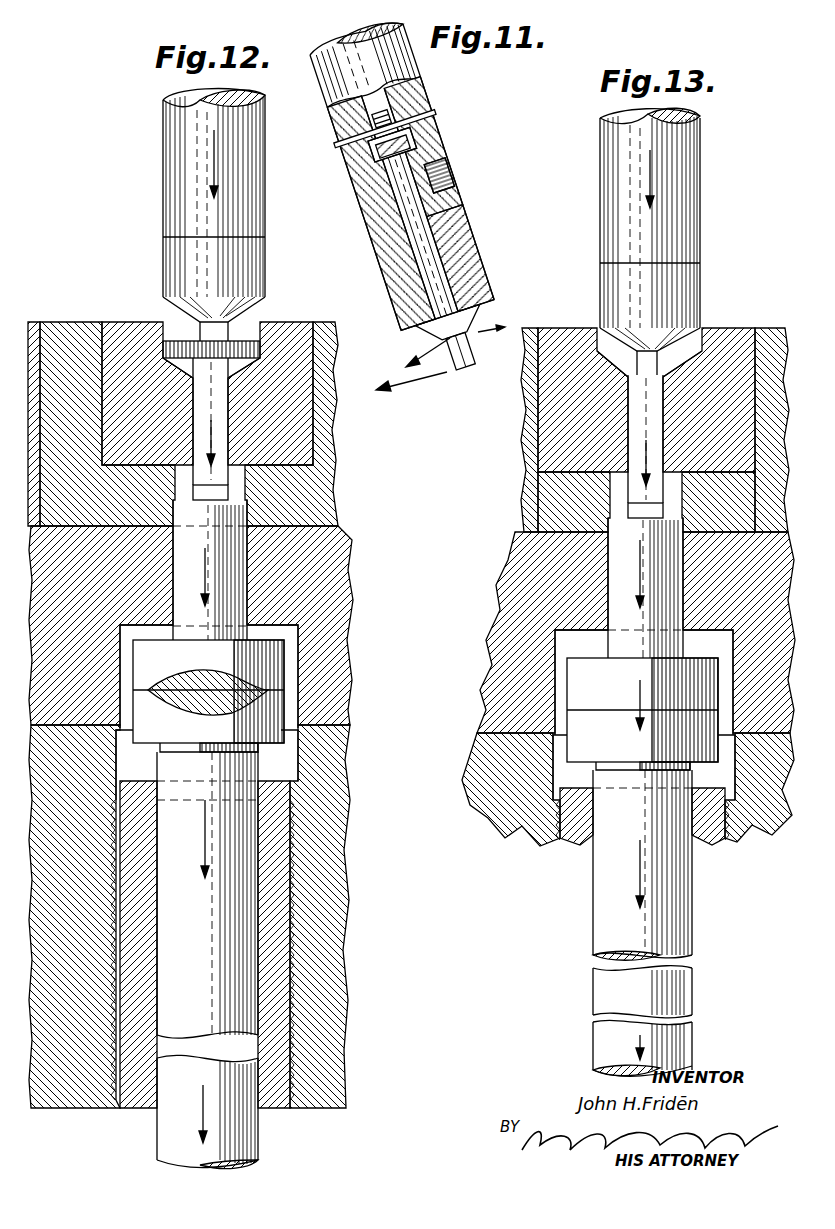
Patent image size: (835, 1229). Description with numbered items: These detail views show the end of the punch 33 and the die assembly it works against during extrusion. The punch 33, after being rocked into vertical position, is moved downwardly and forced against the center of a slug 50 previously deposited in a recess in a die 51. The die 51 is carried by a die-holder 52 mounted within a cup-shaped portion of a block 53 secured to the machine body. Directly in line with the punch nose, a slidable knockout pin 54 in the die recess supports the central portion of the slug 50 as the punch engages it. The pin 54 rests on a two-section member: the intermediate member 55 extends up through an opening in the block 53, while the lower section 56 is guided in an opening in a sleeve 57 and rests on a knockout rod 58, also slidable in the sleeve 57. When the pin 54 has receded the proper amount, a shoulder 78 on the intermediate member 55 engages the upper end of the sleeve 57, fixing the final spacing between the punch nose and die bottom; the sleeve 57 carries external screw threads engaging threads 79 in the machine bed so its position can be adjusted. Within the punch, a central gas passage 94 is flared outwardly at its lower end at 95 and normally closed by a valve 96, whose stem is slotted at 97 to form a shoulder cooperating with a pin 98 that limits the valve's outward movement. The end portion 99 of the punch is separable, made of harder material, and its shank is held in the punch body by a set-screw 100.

In FIG. 12, the punch 33 is at (172, 178).
In FIG. 11, the punch 33 is at (400, 68).
In FIG. 13, the punch 33 is at (688, 148).
In FIG. 12, the passage 94 is at (215, 99).
In FIG. 11, the passage 94 is at (355, 48).
In FIG. 13, the passage 94 is at (660, 124).
In FIG. 12, the end portion of the punch 99 is at (250, 266).
In FIG. 11, the end portion of the punch 99 is at (478, 272).
In FIG. 13, the end portion of the punch 99 is at (688, 285).
In FIG. 12, the valve 96 is at (232, 324).
In FIG. 11, the valve 96 is at (474, 342).
In FIG. 13, the valve 96 is at (644, 345).
In FIG. 11, the flared outward portion 95 is at (482, 322).
In FIG. 11, the slot or groove 97 is at (434, 137).
In FIG. 11, the pin 98 is at (432, 118).
In FIG. 11, the set-screw 100 is at (456, 172).
In FIG. 12, the slug 50 is at (178, 345).
In FIG. 12, the die 51 is at (125, 326).
In FIG. 13, the die 51 is at (727, 340).
In FIG. 12, the die-holder 52 is at (60, 340).
In FIG. 13, the die-holder 52 is at (768, 340).
In FIG. 12, the block 53 is at (342, 562).
In FIG. 13, the block 53 is at (522, 567).
In FIG. 12, the knockout pin 54 is at (233, 393).
In FIG. 13, the knockout pin 54 is at (630, 398).
In FIG. 12, the intermediate member 55 is at (230, 612).
In FIG. 13, the intermediate member 55 is at (642, 548).
In FIG. 12, the shoulder 78 is at (282, 748).
In FIG. 13, the shoulder 78 is at (712, 830).
In FIG. 12, the sleeve 57 is at (280, 877).
In FIG. 13, the sleeve 57 is at (578, 828).
In FIG. 12, the threads 79 is at (296, 914).
In FIG. 13, the threads 79 is at (555, 832).
In FIG. 12, the lower section 56 is at (236, 953).
In FIG. 13, the lower section 56 is at (598, 889).
In FIG. 12, the knockout rod 58 is at (235, 1134).
In FIG. 13, the knockout rod 58 is at (598, 1042).